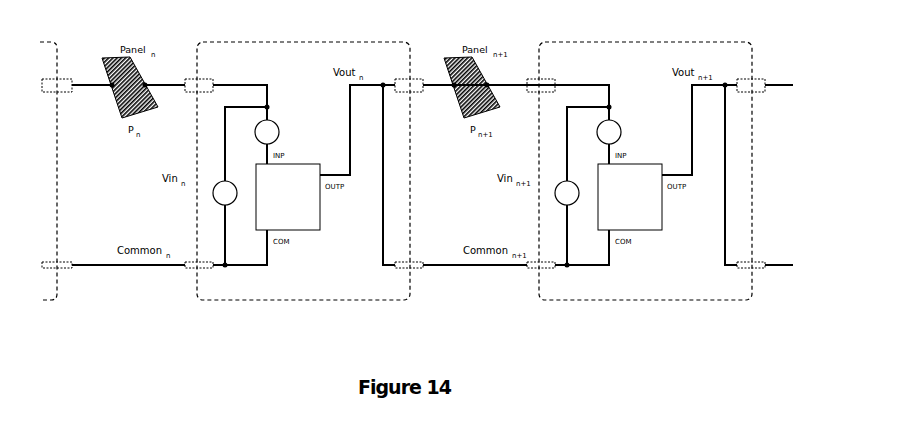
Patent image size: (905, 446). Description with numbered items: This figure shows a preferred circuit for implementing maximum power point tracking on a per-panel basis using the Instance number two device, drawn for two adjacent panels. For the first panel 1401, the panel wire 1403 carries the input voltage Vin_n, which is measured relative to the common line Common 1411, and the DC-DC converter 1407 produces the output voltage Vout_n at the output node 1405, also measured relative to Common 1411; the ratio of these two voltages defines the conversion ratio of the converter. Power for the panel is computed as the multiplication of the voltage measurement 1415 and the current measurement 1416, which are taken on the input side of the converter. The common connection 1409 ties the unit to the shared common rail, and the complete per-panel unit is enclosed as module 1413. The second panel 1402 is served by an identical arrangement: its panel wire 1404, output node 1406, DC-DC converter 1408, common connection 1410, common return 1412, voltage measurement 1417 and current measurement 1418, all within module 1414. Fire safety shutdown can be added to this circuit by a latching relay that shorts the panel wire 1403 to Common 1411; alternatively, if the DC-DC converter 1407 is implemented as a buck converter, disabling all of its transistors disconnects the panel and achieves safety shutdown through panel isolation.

The solar panel n 1401 is at (102, 59).
The solar panel n+1 1402 is at (445, 68).
The panel wire 1403 is at (292, 65).
The input wire of cell n+1 1404 is at (526, 115).
The Vout_n node 1405 is at (350, 128).
The output wire Vout n+1 1406 is at (688, 174).
The DC-DC converter 1407 is at (362, 254).
The DC/DC converter n+1 1408 is at (651, 210).
The common line n 1409 is at (110, 262).
The common line n+1 1410 is at (468, 244).
The Common 1411 is at (319, 290).
The COM return wire n+1 1412 is at (608, 248).
The cell unit n 1413 is at (272, 325).
The cell unit n+1 1414 is at (645, 184).
The voltage measurement 1415 is at (213, 193).
The current measurement 1416 is at (326, 122).
The voltmeter n+1 1417 is at (540, 178).
The ammeter n+1 1418 is at (632, 125).